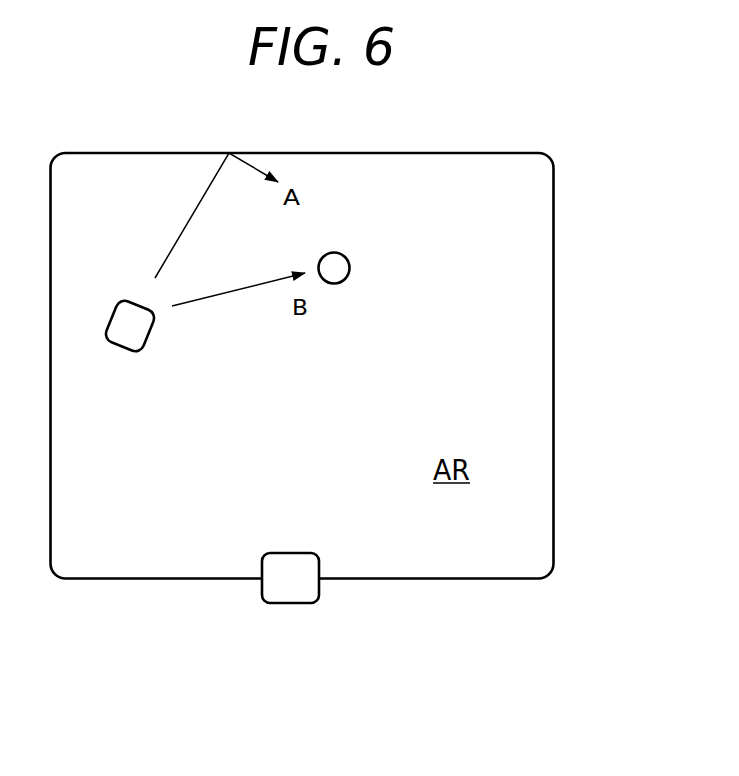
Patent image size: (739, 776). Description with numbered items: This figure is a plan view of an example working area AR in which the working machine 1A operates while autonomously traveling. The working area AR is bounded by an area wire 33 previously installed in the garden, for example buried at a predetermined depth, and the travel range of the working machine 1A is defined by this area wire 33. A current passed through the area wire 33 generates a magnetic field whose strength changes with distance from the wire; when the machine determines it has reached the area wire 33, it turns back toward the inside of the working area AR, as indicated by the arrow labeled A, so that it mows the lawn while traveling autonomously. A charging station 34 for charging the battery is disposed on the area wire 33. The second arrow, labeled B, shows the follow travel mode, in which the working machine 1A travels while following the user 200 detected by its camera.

The working machine 1A is at (152, 334).
The user 200 is at (350, 274).
The area wire 33 is at (554, 298).
The charging station 34 is at (292, 603).